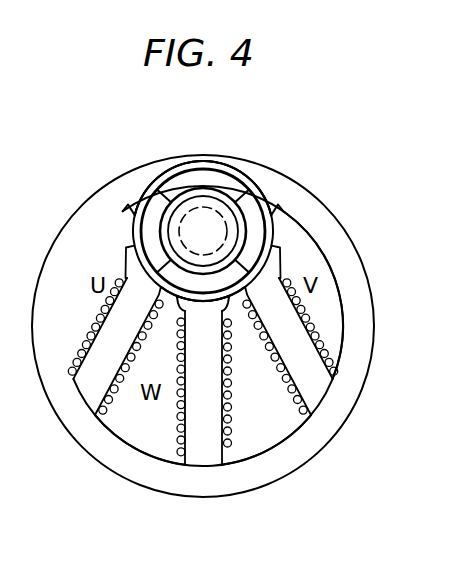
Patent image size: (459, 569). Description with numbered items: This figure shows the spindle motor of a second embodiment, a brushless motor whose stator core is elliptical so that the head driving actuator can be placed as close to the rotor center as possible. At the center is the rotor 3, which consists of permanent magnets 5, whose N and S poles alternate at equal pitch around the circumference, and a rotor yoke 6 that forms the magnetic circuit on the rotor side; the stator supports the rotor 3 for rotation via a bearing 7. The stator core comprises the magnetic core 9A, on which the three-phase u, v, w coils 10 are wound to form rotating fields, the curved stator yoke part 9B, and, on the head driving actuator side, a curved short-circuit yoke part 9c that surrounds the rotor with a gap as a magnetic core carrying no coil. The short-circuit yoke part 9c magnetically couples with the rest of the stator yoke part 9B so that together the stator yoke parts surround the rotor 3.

The rotor 3 is at (227, 167).
The permanent magnets 5 is at (187, 181).
The rotor yoke 6 is at (167, 213).
The bearing 7 is at (230, 228).
The magnetic core 9A is at (185, 423).
The stator yoke part 9B is at (212, 490).
The short-circuit yoke part 9c is at (265, 177).
The coils 10 is at (232, 398).